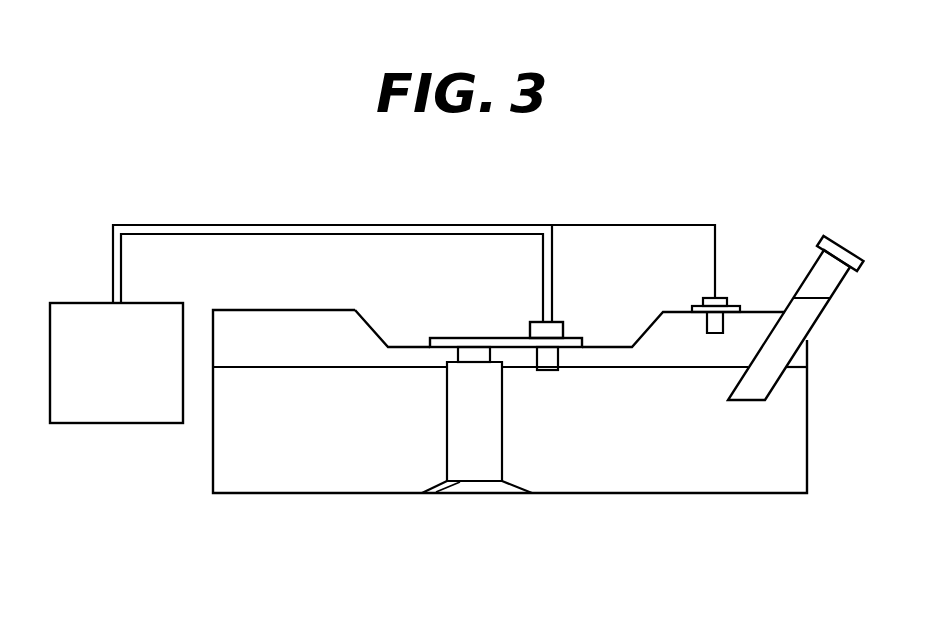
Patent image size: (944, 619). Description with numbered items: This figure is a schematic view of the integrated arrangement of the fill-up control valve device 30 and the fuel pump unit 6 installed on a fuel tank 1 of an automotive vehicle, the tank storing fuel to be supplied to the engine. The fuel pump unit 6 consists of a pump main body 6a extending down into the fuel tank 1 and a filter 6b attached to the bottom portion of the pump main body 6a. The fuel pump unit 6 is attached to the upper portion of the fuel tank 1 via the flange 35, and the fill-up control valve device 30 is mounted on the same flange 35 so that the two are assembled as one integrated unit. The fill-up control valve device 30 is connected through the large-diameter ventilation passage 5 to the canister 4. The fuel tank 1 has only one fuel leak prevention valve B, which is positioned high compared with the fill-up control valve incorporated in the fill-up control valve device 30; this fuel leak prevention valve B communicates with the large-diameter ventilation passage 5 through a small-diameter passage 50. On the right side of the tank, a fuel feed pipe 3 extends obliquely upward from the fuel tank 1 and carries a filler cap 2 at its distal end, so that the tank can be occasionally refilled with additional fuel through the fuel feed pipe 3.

The fuel tank 1 is at (595, 449).
The filler cap 2 is at (822, 243).
The fuel feed pipe 3 is at (818, 322).
The canister 4 is at (130, 401).
The ventilation passage 5 is at (316, 225).
The fuel pump unit 6 is at (537, 494).
The pump main body 6a is at (462, 405).
The filter 6b is at (442, 495).
The fill-up control valve device 30 is at (571, 322).
The flange 35 is at (470, 337).
The small-diameter passage 50 is at (630, 225).
The fuel leak prevention valve B is at (716, 301).